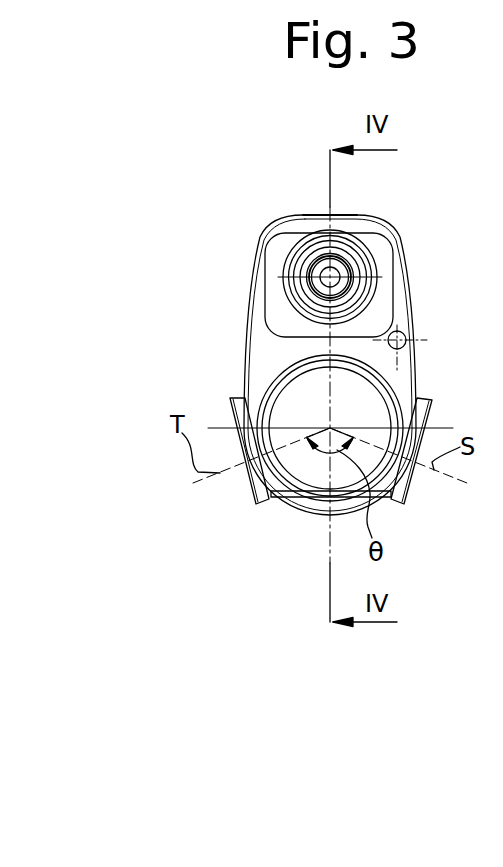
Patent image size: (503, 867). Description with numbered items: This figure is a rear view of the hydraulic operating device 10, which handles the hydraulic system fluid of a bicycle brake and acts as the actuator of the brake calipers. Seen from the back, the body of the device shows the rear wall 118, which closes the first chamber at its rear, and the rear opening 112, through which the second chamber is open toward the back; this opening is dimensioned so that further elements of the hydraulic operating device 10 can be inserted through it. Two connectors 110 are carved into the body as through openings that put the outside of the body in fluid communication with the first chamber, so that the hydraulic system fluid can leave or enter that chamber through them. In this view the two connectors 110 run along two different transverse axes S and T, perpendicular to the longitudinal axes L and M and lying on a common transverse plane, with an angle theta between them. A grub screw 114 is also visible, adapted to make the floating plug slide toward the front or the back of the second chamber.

The hydraulic operating device 10 is at (270, 225).
The rear opening 112 is at (357, 228).
The grub screw 114 is at (407, 331).
The rear wall 118 is at (327, 421).
The connectors 110 is at (248, 470).